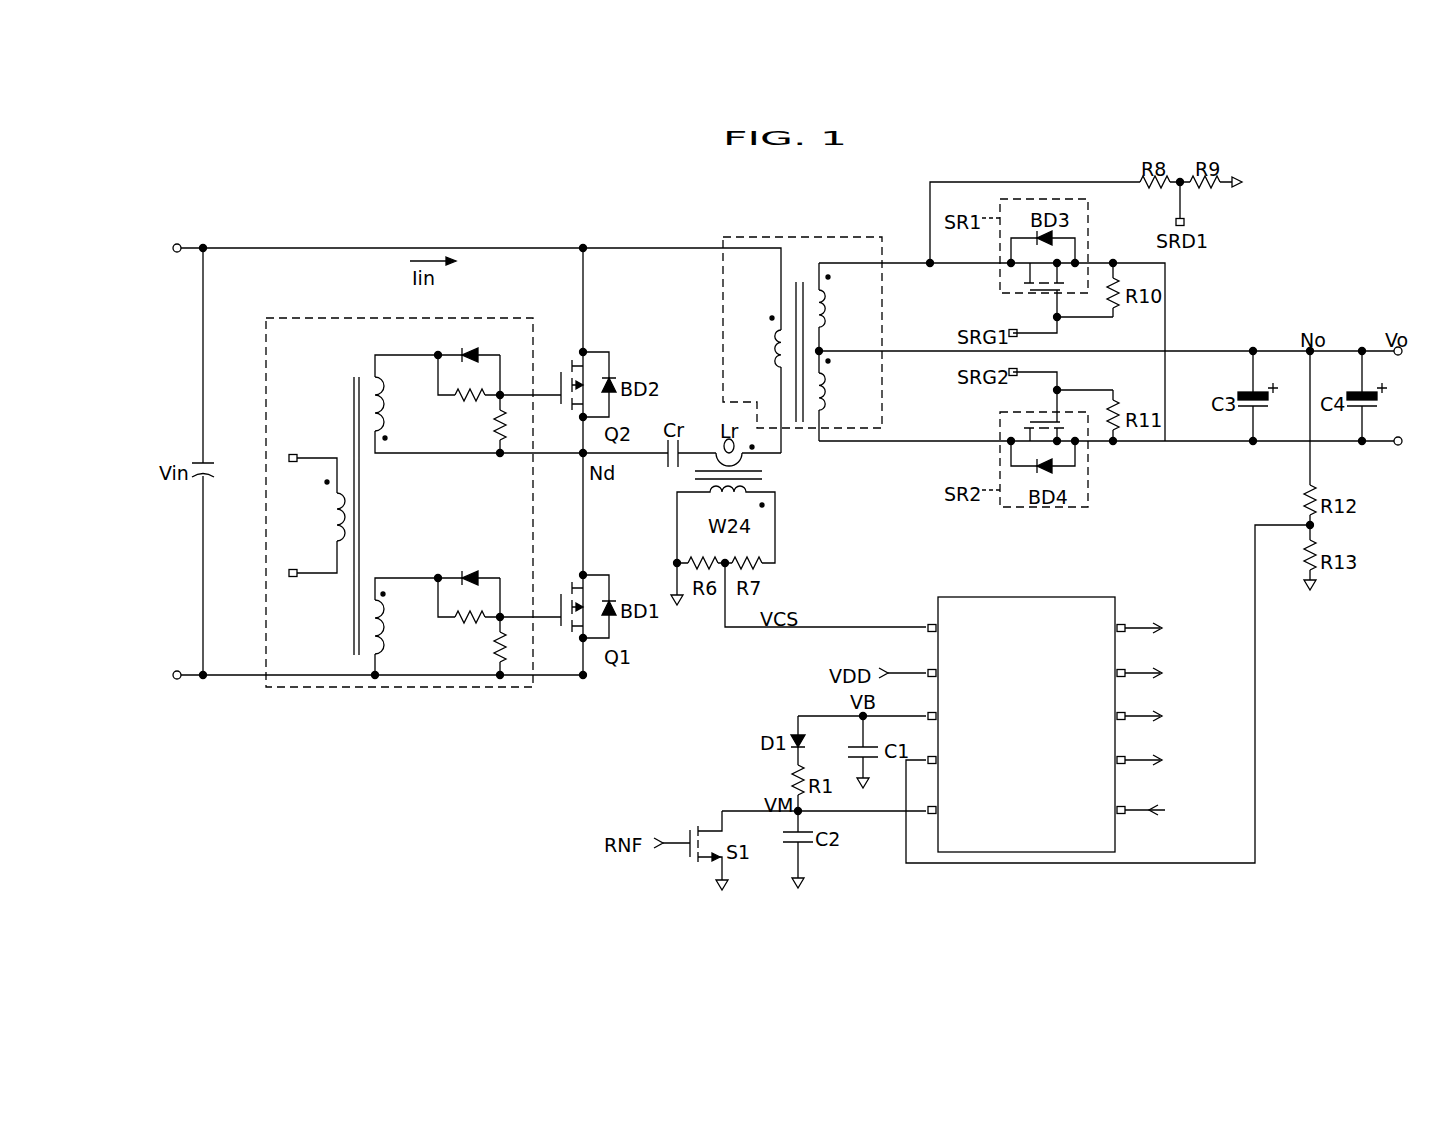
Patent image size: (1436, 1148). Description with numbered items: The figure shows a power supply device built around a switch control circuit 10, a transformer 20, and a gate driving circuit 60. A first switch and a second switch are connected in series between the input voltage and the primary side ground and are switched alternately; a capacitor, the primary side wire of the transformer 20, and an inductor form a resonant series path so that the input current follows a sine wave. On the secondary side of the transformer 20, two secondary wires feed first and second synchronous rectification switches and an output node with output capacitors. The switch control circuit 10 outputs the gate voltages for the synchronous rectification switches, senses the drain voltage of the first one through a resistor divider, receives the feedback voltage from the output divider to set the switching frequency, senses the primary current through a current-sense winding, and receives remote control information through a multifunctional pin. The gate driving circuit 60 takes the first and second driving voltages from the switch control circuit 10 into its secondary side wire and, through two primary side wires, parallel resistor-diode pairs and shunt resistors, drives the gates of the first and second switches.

The switch control circuit 10 is at (1030, 597).
The transformer 20 is at (805, 237).
The gate driving circuit 60 is at (400, 688).